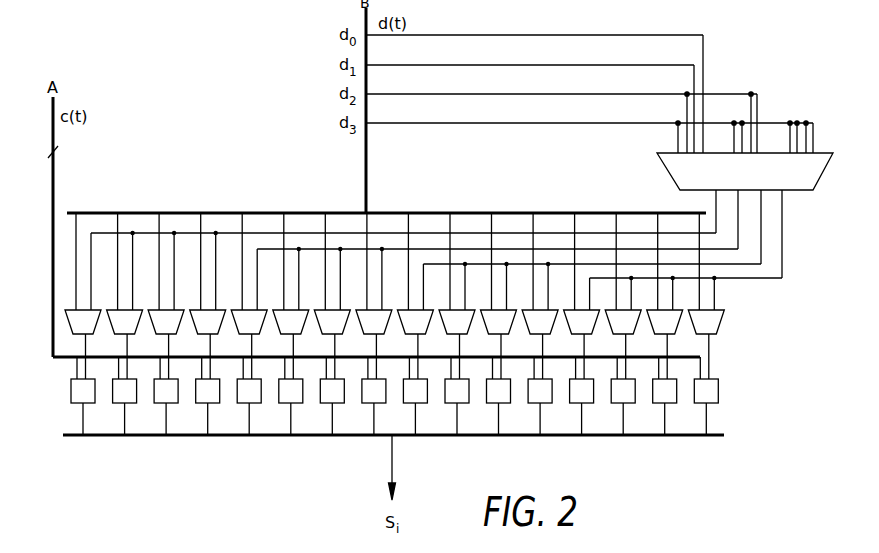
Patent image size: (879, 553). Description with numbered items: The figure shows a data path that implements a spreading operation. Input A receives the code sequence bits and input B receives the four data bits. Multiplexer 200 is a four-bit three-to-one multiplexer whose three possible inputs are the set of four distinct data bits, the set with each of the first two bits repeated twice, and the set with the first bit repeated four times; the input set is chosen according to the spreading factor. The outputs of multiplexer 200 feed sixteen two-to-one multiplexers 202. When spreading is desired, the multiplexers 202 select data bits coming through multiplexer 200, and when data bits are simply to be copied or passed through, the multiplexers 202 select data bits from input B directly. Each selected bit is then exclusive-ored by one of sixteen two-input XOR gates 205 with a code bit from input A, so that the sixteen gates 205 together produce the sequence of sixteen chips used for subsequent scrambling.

The multiplexer 200 is at (799, 183).
The 2-to-1 multiplexers 202 is at (72, 323).
The two-input XOR gates 205 is at (68, 396).